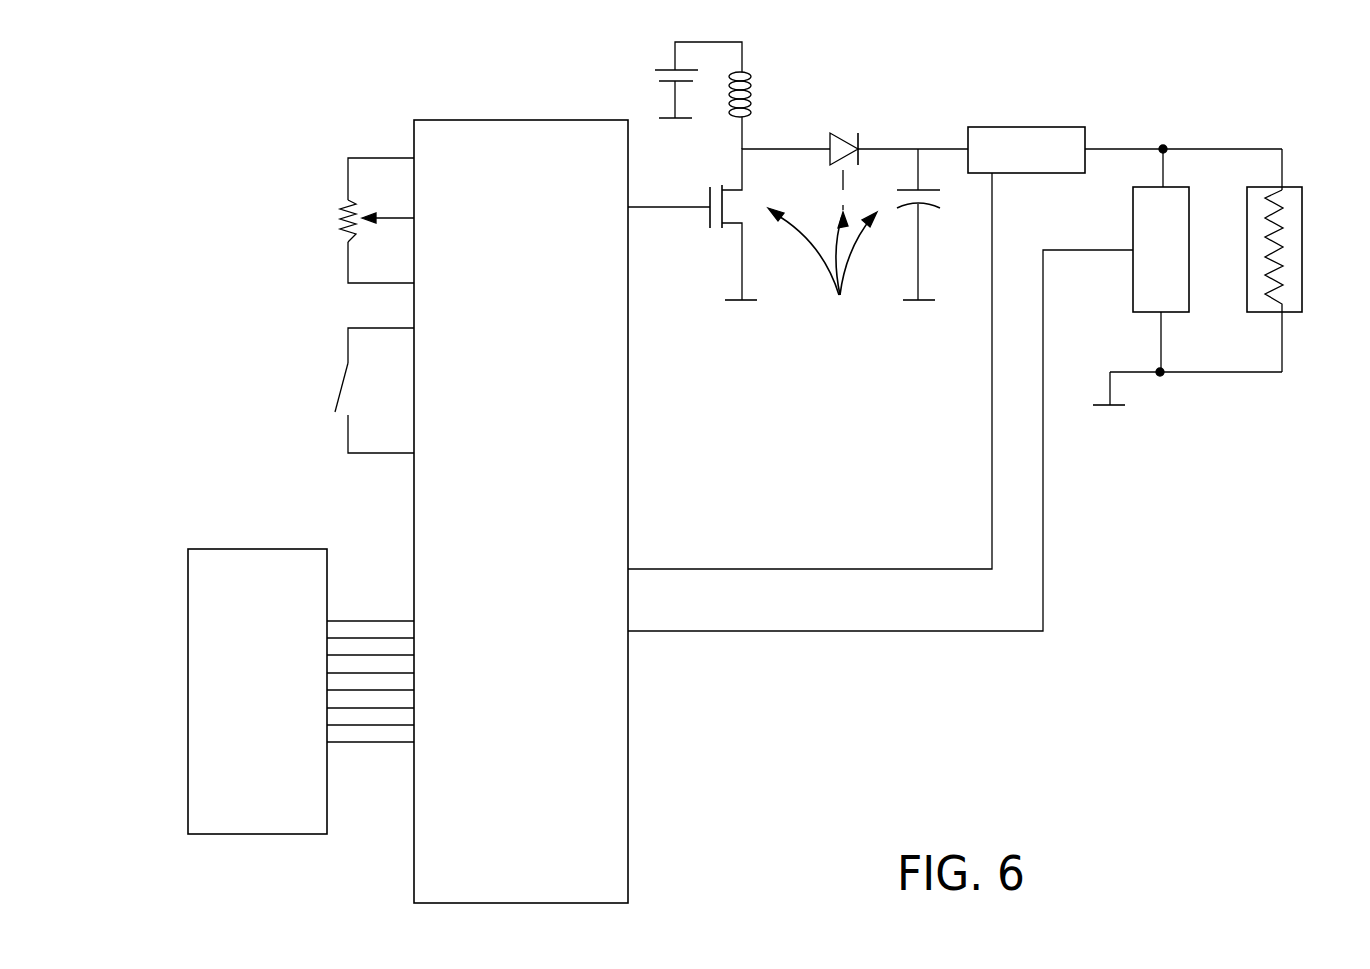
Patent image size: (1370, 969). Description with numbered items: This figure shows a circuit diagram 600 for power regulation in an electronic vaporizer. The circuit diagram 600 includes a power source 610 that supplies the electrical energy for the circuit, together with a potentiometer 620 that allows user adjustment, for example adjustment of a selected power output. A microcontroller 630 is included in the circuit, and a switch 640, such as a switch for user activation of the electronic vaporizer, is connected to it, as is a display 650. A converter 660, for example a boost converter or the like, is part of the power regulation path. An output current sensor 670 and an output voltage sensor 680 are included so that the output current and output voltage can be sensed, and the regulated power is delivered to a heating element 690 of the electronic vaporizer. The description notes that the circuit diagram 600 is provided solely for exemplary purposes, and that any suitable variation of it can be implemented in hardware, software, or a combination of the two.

The circuit diagram 600 is at (170, 275).
The power source 610 is at (656, 72).
The potentiometer 620 is at (338, 218).
The microcontroller 630 is at (540, 349).
The switch 640 is at (343, 384).
The display 650 is at (268, 702).
The converter 660 is at (868, 227).
The output current sensor 670 is at (1043, 163).
The output voltage sensor 680 is at (1183, 263).
The heating element 690 is at (1304, 215).